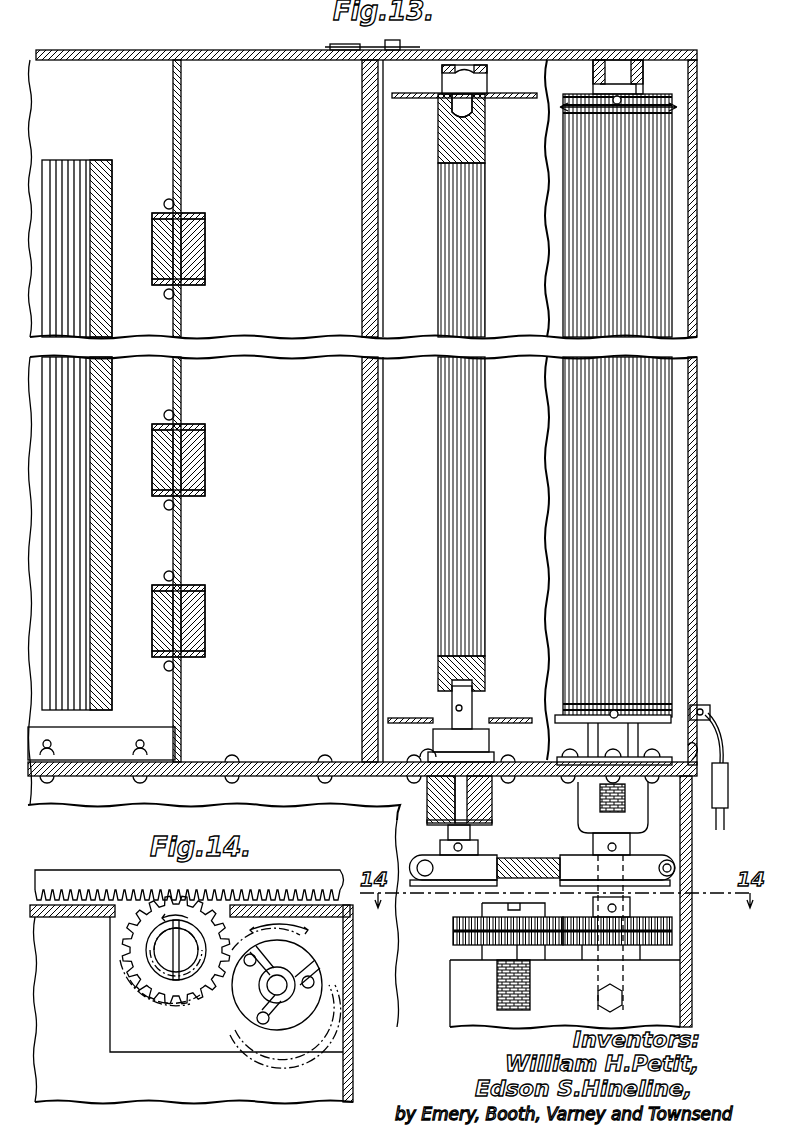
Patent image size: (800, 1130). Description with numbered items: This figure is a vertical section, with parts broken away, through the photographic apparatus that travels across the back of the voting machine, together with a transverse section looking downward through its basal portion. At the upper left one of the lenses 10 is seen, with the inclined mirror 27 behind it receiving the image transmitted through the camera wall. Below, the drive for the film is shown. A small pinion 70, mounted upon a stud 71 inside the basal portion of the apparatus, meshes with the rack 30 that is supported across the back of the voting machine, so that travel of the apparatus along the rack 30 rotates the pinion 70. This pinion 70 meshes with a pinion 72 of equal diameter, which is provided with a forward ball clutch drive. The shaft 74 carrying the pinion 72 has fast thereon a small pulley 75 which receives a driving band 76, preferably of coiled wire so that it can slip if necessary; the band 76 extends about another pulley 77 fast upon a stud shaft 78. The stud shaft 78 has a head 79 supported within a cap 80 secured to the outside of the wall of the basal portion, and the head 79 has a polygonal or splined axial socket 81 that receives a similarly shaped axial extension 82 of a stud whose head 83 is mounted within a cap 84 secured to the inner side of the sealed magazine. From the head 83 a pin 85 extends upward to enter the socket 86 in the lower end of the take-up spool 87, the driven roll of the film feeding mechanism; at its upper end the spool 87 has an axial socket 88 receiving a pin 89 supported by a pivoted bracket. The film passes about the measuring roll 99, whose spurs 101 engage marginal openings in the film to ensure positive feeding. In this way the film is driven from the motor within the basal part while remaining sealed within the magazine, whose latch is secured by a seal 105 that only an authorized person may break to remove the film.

In FIG. 13, the lens 10 is at (200, 257).
In FIG. 13, the inclined mirror 27 is at (100, 398).
In FIG. 14, the rack 30 is at (88, 878).
In FIG. 13, the pinion 70 is at (462, 937).
In FIG. 14, the pinion 70 is at (128, 922).
In FIG. 14, the stud 71 is at (148, 962).
In FIG. 13, the pinion 72 is at (672, 940).
In FIG. 14, the pinion 72 is at (240, 1022).
In FIG. 13, the shaft 74 is at (610, 886).
In FIG. 13, the pulley 75 is at (646, 862).
In FIG. 13, the driving band 76 is at (676, 868).
In FIG. 13, the pulley 77 is at (452, 872).
In FIG. 13, the stud shaft 78 is at (478, 840).
In FIG. 13, the head 79 is at (440, 823).
In FIG. 13, the cap 80 is at (428, 803).
In FIG. 13, the axial socket 81 is at (448, 838).
In FIG. 13, the axial extension 82 is at (470, 792).
In FIG. 13, the head 83 is at (480, 732).
In FIG. 13, the cap 84 is at (494, 754).
In FIG. 13, the pin 85 is at (470, 697).
In FIG. 13, the socket 86 is at (440, 666).
In FIG. 13, the take-up spool 87 is at (450, 503).
In FIG. 13, the axial socket 88 is at (440, 130).
In FIG. 13, the pin 89 is at (444, 80).
In FIG. 13, the measuring roll 99 is at (577, 243).
In FIG. 13, the spurs 101 is at (562, 110).
In FIG. 13, the seal 105 is at (728, 790).